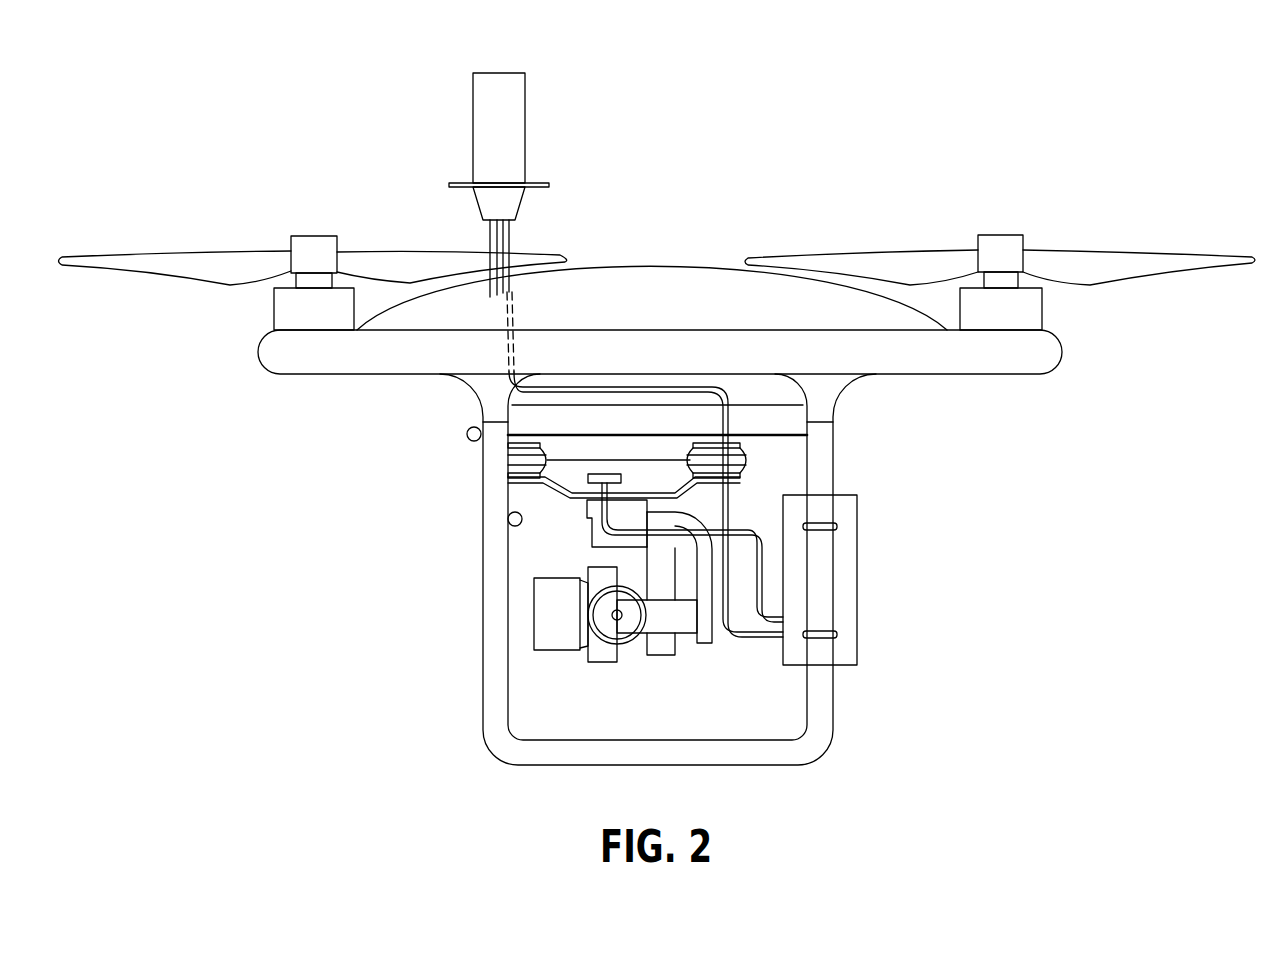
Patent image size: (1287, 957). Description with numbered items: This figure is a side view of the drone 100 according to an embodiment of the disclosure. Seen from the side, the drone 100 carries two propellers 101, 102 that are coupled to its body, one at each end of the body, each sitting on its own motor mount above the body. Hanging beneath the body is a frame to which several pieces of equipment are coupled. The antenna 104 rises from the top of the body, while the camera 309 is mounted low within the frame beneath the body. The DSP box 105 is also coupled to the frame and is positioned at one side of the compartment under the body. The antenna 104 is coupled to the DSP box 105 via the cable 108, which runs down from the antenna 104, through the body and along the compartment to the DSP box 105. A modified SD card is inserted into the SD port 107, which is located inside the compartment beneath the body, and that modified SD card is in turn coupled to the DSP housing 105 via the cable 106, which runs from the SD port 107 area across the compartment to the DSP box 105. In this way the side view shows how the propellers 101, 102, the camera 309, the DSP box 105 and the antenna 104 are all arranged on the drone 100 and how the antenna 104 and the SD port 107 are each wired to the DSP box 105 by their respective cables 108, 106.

The drone 100 is at (1158, 125).
The propeller 101 is at (167, 252).
The propeller 102 is at (867, 252).
The antenna 104 is at (475, 119).
The DSP box 105 is at (848, 553).
The cable 106 is at (607, 531).
The SD port 107 is at (588, 478).
The cable 108 is at (728, 507).
The camera 309 is at (557, 650).